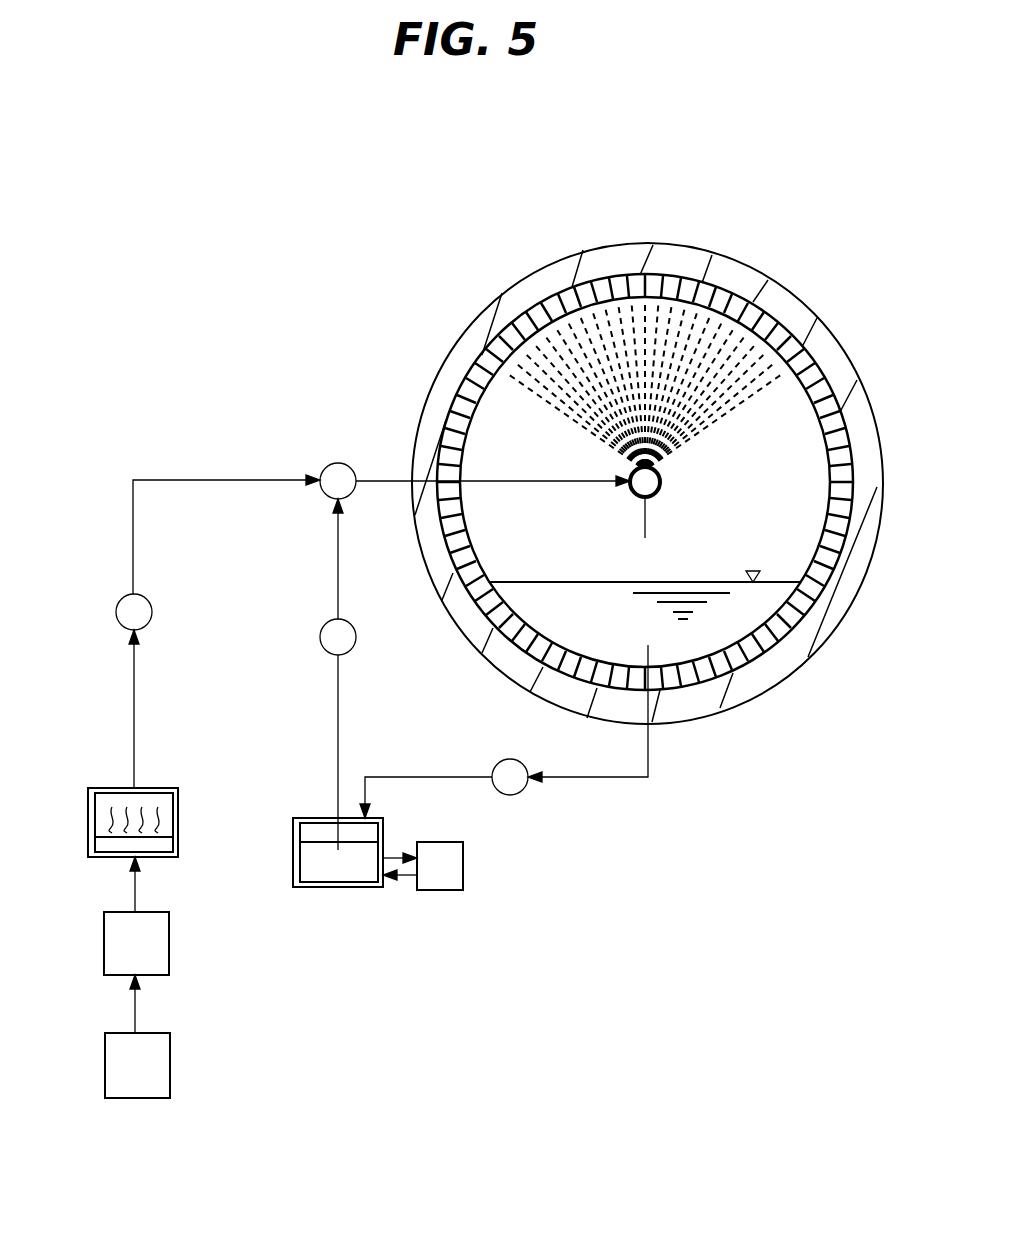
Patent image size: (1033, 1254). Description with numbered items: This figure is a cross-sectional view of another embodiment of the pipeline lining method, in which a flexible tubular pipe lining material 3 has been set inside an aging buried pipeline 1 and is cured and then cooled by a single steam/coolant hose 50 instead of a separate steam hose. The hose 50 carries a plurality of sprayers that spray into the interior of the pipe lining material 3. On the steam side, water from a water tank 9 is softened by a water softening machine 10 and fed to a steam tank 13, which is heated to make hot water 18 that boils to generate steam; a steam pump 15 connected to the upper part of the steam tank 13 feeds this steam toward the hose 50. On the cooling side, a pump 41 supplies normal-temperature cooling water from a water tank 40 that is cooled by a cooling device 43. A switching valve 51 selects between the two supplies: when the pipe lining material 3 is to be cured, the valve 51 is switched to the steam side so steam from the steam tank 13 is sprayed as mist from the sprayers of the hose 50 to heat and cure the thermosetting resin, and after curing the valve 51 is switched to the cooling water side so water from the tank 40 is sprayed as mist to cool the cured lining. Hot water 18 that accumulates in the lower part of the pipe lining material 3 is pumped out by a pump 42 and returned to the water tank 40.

The pipeline 1 is at (740, 263).
The pipe lining material 3 is at (533, 313).
The steam/coolant hose 50 is at (660, 478).
The hot water 18 is at (702, 638).
The switching valve 51 is at (322, 466).
The steam pump 15 is at (117, 610).
The pump 41 is at (356, 632).
The steam tank 13 is at (173, 788).
The water softening machine 10 is at (170, 938).
The water tank 9 is at (170, 1062).
The water tank 40 is at (293, 828).
The pump 42 is at (514, 795).
The cooling device 43 is at (437, 890).